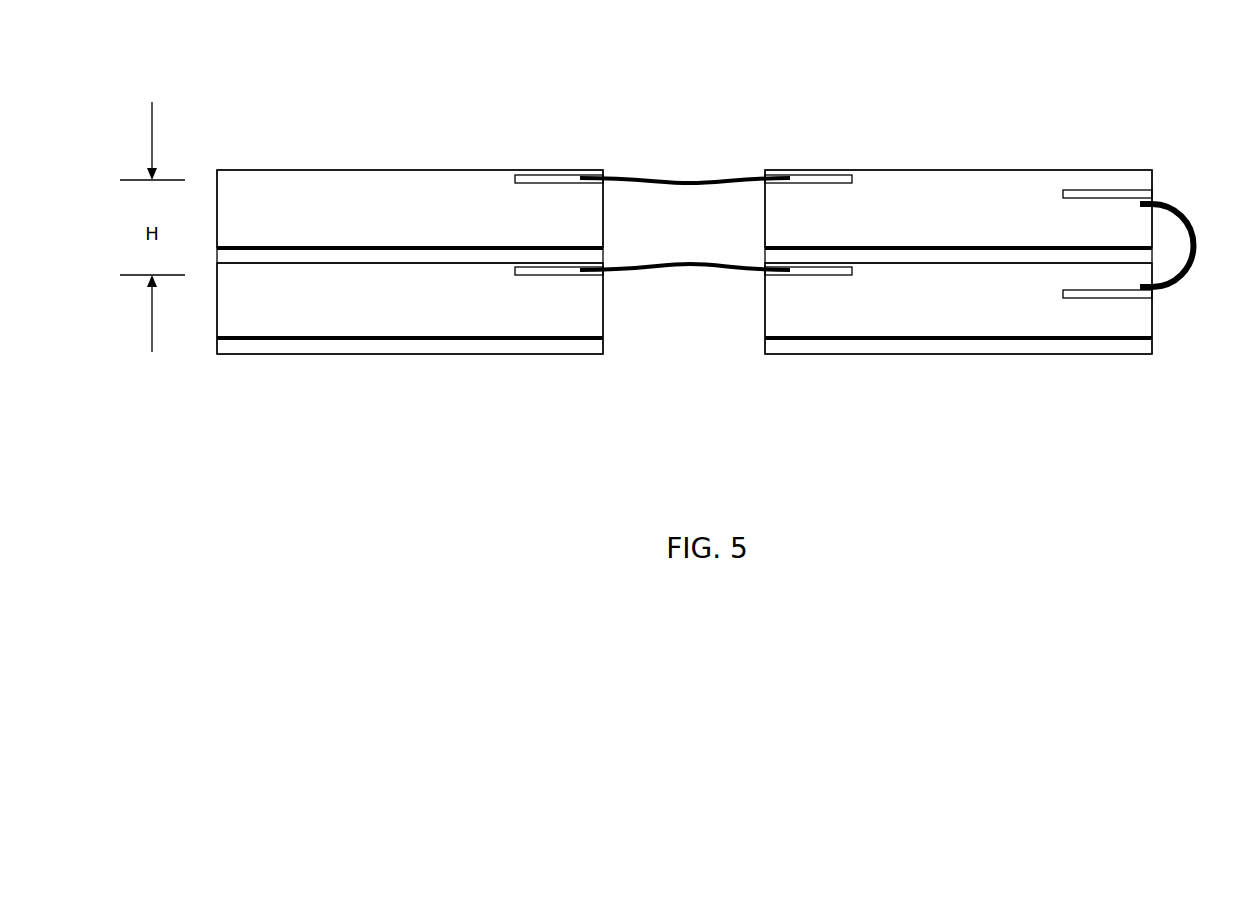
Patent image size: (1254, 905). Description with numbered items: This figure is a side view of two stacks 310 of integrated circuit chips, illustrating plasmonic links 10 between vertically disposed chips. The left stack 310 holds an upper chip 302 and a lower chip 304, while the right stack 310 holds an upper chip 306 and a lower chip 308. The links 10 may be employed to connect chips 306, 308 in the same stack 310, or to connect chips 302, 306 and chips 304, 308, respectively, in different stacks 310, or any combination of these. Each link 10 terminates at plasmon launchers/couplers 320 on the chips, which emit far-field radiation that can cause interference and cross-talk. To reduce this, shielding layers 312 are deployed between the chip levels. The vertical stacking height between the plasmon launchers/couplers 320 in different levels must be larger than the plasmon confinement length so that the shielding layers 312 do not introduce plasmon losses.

The link 10 is at (640, 172).
The chip 302 is at (264, 170).
The chip 304 is at (217, 320).
The chip 306 is at (1000, 185).
The chip 308 is at (1140, 315).
The stack 310 is at (448, 96).
The shielding layer 312 is at (413, 258).
The plasmon launcher/coupler 320 is at (545, 172).